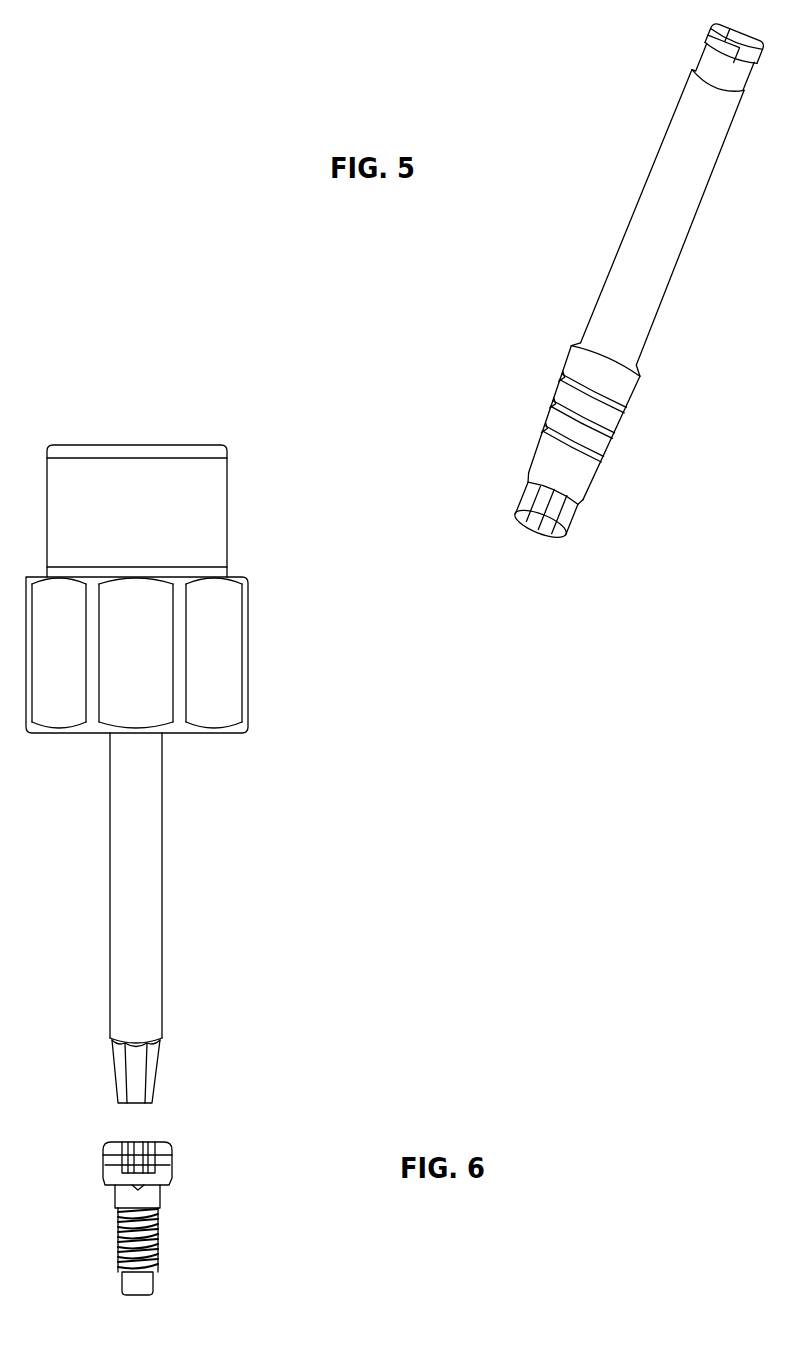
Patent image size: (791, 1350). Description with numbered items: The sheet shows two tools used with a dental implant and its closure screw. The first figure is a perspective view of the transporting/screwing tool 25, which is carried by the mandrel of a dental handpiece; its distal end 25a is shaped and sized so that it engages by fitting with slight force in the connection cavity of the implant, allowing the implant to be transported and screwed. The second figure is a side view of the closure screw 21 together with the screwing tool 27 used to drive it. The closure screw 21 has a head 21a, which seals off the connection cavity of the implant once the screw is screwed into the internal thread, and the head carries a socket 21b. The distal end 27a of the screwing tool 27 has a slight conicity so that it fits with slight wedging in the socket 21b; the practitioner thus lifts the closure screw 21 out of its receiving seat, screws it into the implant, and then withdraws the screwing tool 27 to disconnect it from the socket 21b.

In FIG. 5, the transporting/screwing tool 25 is at (612, 260).
In FIG. 5, the distal end 25a is at (525, 493).
In FIG. 6, the screwing tool 27 is at (163, 820).
In FIG. 6, the distal end 27a is at (148, 1077).
In FIG. 6, the closure screw 21 is at (167, 1195).
In FIG. 6, the head 21a is at (163, 1163).
In FIG. 6, the socket 21b is at (140, 1143).